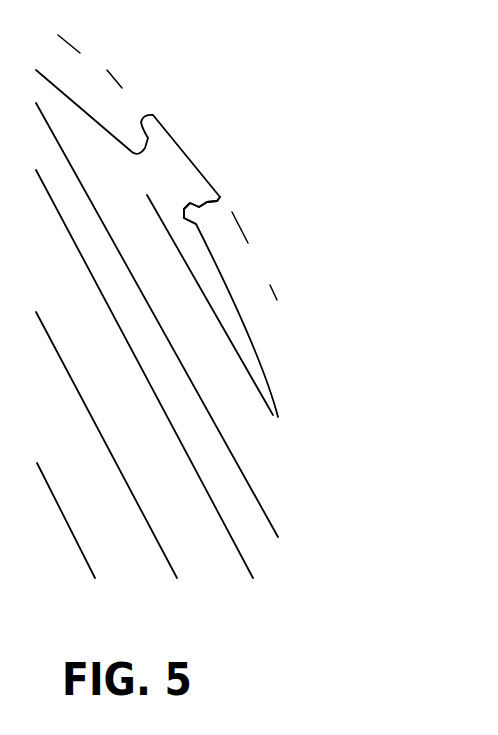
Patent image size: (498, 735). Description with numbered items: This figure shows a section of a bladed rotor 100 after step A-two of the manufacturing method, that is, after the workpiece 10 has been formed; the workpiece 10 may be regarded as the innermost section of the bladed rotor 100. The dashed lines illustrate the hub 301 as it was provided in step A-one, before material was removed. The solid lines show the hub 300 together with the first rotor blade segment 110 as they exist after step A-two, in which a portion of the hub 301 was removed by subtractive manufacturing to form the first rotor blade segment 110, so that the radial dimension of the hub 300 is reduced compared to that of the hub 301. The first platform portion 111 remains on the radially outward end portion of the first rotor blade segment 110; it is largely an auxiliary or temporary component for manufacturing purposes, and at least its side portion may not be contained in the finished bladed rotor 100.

The workpiece 10 is at (95, 112).
The bladed rotor 100 is at (290, 421).
The first rotor blade segment 110 is at (204, 215).
The first platform portion 111 is at (224, 198).
The hub 300 is at (273, 370).
The hub 301 is at (38, 92).